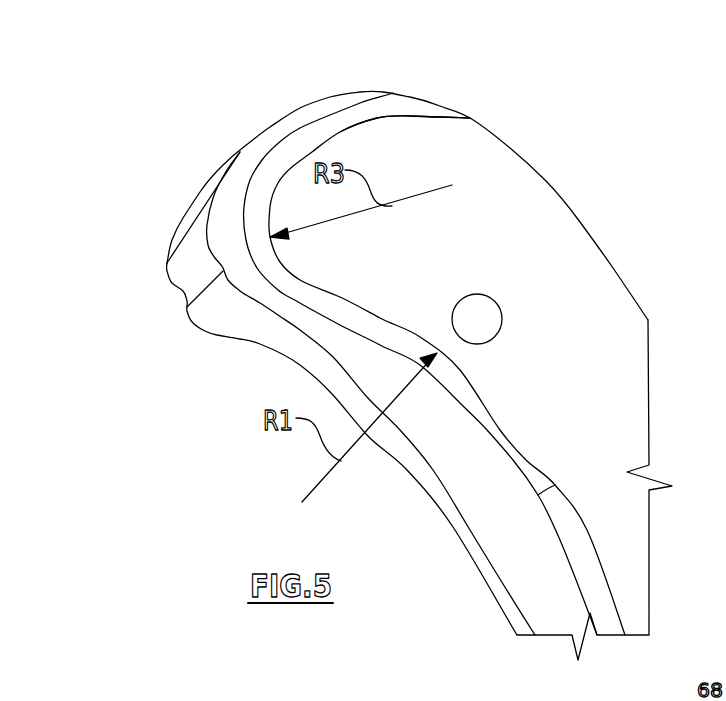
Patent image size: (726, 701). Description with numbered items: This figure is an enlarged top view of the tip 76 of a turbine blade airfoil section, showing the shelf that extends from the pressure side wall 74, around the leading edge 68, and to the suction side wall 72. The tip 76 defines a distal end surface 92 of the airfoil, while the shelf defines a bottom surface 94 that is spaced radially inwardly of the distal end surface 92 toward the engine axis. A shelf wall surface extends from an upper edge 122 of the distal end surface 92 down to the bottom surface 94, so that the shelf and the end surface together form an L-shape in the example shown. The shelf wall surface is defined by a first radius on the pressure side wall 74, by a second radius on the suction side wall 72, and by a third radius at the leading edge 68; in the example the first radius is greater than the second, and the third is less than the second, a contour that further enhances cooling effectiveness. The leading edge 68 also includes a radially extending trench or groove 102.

The leading edge 68 is at (182, 238).
The suction side wall 72 is at (620, 268).
The pressure side wall 74 is at (434, 364).
The tip 76 is at (628, 343).
The distal end surface 92 is at (555, 286).
The bottom surface 94 is at (477, 513).
The trench or groove 102 is at (268, 215).
The upper edge 122 is at (377, 118).